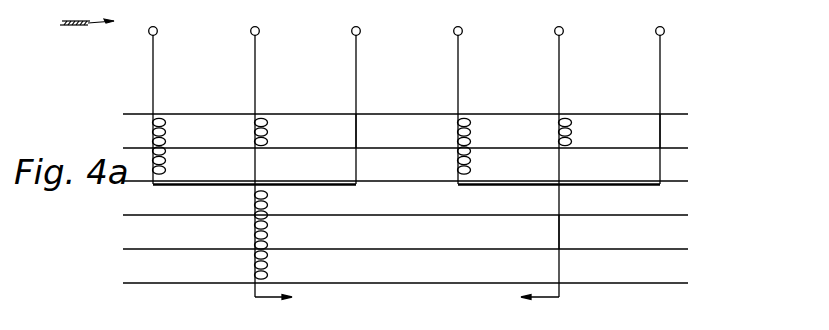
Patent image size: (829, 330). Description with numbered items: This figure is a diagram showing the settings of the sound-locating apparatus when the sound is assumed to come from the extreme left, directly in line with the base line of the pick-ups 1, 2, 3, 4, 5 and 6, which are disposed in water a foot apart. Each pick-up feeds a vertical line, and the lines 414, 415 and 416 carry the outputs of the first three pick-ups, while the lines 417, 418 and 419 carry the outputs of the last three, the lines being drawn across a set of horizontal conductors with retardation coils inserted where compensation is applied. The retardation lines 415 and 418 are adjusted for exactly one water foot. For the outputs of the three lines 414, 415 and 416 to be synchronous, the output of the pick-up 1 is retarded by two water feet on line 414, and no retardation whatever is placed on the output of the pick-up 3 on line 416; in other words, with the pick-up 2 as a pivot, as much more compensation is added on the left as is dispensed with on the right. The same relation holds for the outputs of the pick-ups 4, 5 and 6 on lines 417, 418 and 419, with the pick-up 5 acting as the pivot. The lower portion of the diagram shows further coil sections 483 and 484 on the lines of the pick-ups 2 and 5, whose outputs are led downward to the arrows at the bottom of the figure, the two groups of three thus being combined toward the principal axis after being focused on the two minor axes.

The pick-up 1 is at (154, 94).
The pick-up 2 is at (271, 152).
The pick-up 3 is at (355, 94).
The pick-up 4 is at (457, 94).
The pick-up 5 is at (542, 152).
The pick-up 6 is at (660, 94).
The retardation line 414 is at (166, 131).
The retardation line 415 is at (268, 130).
The retardation line 416 is at (358, 131).
The retardation line 417 is at (471, 130).
The retardation line 418 is at (572, 128).
The retardation line 419 is at (682, 131).
The coil 483 is at (269, 232).
The conductor 484 is at (560, 230).